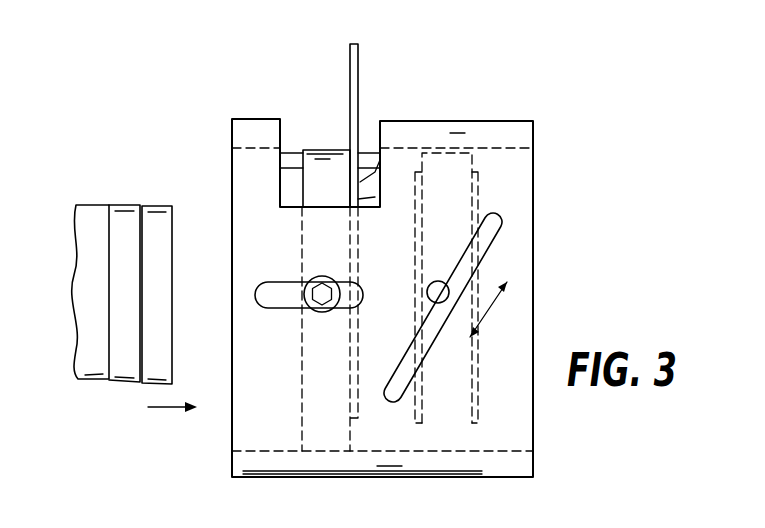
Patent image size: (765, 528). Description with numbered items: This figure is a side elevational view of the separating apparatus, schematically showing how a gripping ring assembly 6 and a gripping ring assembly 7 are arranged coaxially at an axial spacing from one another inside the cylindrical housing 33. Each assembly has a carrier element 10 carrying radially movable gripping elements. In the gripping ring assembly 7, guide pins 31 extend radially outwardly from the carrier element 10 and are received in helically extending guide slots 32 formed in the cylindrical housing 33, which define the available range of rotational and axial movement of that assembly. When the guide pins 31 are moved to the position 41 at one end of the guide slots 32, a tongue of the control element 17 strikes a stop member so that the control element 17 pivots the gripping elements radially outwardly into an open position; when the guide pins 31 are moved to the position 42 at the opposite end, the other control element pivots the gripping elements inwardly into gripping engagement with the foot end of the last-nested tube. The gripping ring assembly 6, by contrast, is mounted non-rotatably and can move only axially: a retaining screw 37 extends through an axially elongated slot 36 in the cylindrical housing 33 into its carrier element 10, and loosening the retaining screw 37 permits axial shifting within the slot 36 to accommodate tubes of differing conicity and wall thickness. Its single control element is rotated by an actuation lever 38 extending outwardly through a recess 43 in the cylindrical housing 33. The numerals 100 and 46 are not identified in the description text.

The workpiece sheets / stack 100 is at (101, 391).
The cylindrical housing 33 is at (520, 468).
The carrier element 10 is at (330, 150).
The actuation lever 38 is at (350, 44).
The recess 43 is at (361, 181).
The stop 46 is at (358, 199).
The control element 17 is at (485, 180).
The axially elongated slot 36 is at (272, 307).
The retaining screw 37 is at (329, 304).
The position 41 is at (497, 227).
The helically extending guide slot 32 is at (487, 250).
The guide pin 31 is at (438, 281).
The position 42 is at (395, 400).
The gripping ring assembly 6 is at (332, 446).
The gripping ring assembly 7 is at (440, 446).